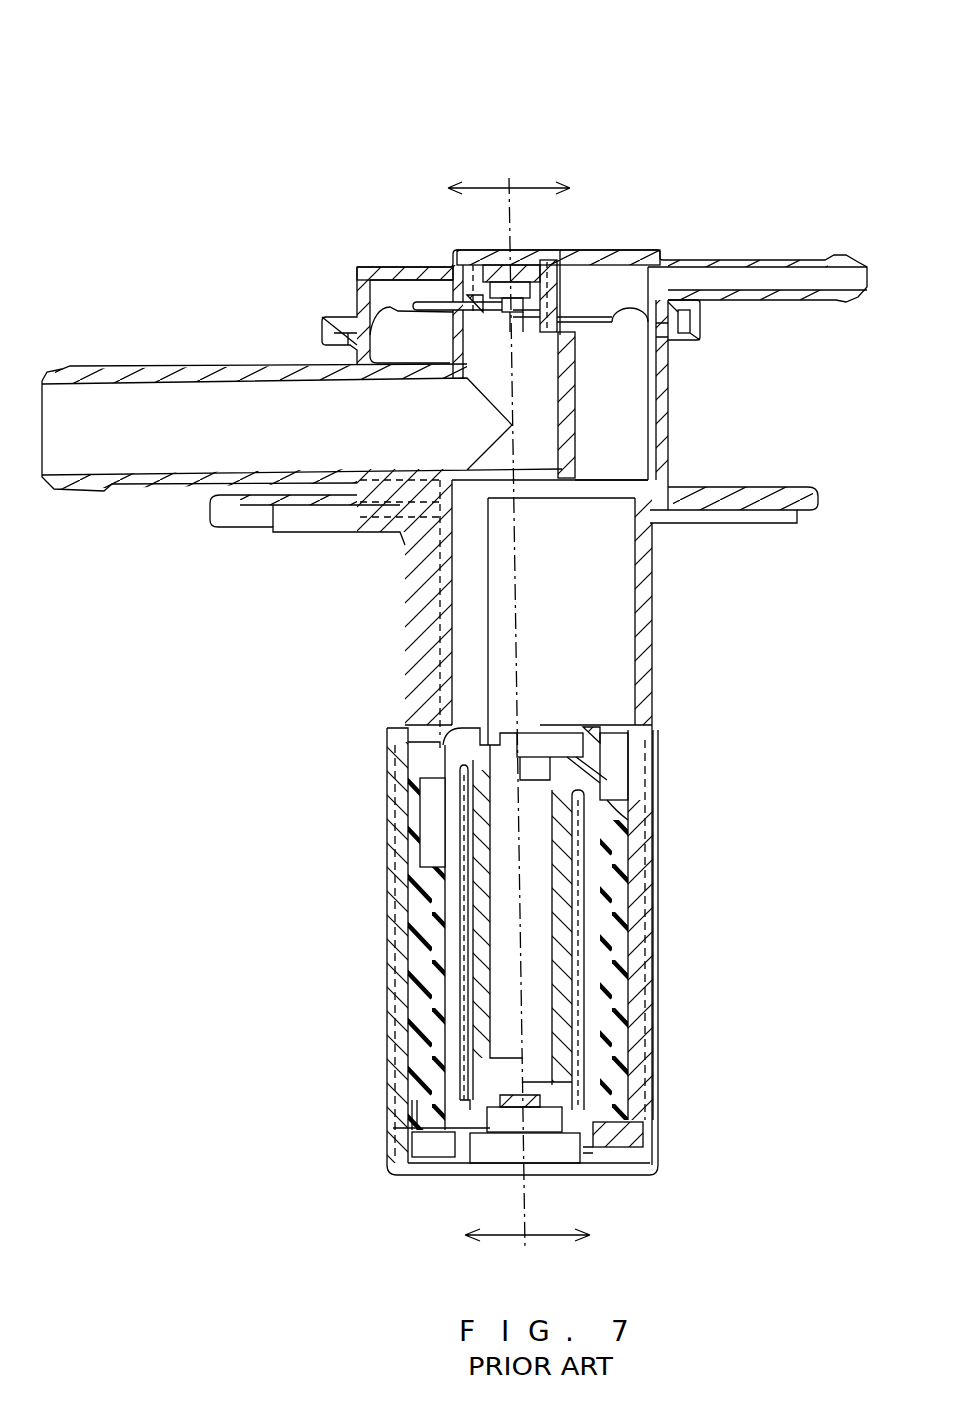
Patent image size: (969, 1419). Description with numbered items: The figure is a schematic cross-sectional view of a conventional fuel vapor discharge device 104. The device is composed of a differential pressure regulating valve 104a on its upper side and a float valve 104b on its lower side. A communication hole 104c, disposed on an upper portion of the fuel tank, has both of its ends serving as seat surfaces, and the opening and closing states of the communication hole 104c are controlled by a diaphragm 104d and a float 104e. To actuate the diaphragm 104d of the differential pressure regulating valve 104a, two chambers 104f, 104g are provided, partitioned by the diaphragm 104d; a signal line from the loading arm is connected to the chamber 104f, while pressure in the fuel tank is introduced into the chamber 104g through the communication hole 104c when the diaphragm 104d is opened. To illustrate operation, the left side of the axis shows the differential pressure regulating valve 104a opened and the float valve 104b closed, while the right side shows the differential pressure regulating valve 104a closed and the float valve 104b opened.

The fuel vapor discharge device 104 is at (293, 94).
The differential pressure regulating valve 104a is at (639, 210).
The float valve 104b is at (668, 797).
The communication hole 104c is at (470, 622).
The diaphragm 104d is at (402, 312).
The float 104e is at (622, 946).
The chamber 104f is at (628, 287).
The chamber 104g is at (630, 422).